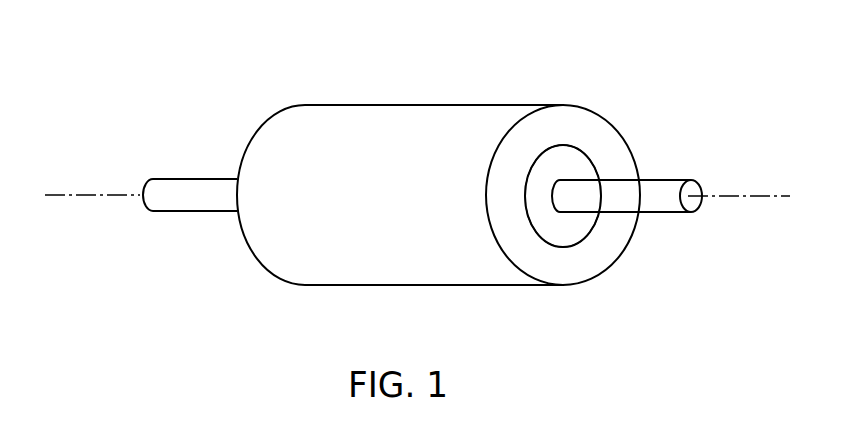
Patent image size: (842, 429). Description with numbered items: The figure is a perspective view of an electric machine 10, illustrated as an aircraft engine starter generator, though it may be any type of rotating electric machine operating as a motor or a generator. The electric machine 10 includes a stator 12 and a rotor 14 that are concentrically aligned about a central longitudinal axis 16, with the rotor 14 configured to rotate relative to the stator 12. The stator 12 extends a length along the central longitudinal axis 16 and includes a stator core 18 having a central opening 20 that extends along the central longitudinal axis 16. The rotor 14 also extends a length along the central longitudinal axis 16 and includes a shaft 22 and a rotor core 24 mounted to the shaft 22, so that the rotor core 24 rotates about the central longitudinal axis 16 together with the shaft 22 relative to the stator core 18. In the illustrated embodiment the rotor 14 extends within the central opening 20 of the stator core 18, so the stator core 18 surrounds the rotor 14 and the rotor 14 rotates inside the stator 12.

The electric machine 10 is at (655, 58).
The stator 12 is at (613, 124).
The rotor 14 is at (598, 170).
The central longitudinal axis 16 is at (93, 195).
The stator core 18 is at (552, 127).
The central opening 20 is at (555, 243).
The shaft 22 is at (667, 207).
The rotor core 24 is at (567, 223).